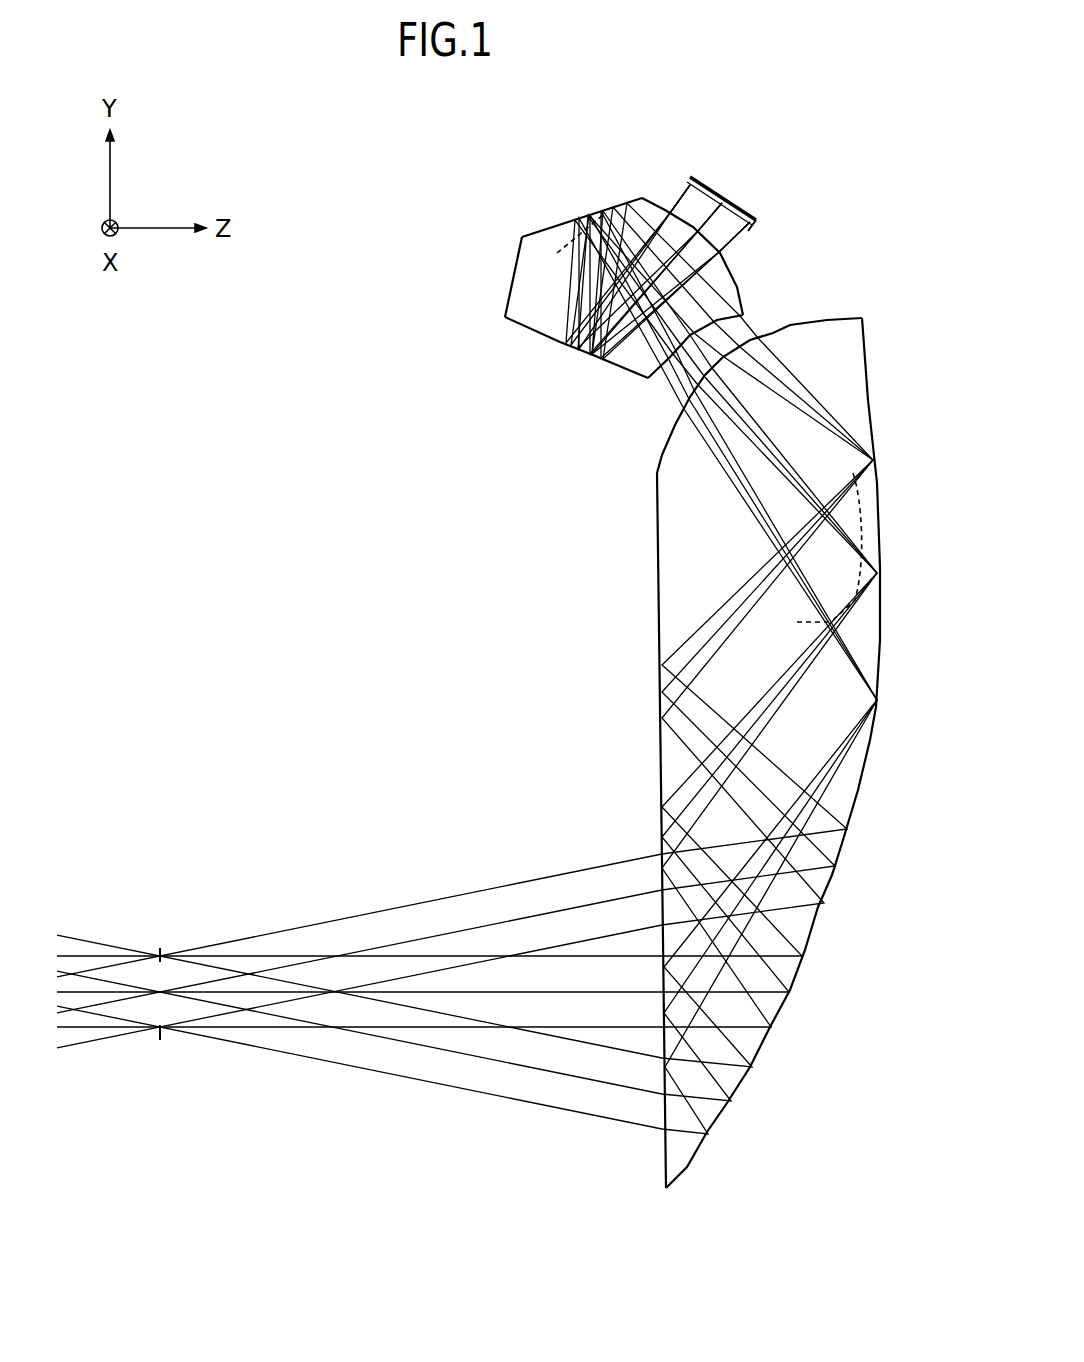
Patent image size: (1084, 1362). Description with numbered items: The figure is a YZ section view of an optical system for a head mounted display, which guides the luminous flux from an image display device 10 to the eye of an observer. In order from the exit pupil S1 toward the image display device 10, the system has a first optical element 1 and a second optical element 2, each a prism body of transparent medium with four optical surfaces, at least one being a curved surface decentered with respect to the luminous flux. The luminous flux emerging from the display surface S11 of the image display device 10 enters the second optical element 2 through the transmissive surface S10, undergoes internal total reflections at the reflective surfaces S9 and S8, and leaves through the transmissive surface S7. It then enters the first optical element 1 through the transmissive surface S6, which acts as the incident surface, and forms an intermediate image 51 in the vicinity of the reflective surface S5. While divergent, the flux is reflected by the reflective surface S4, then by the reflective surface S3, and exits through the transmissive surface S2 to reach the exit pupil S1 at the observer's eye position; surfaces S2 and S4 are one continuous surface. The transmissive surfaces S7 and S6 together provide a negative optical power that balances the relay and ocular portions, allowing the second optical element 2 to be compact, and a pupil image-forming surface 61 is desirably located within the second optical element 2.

The first optical element 1 is at (747, 732).
The second optical element 2 is at (658, 283).
The image display device 10 is at (764, 169).
The intermediate image 51 is at (857, 487).
The pupil image-forming surface 61 is at (570, 237).
The exit pupil S1 is at (160, 950).
The transmissive surface S2 is at (666, 997).
The reflective surface S3 is at (792, 990).
The reflective surface S4 is at (662, 838).
The reflective surface S5 is at (878, 558).
The transmissive surface S6 is at (725, 338).
The transmissive surface S7 is at (668, 368).
The reflective surface S8 is at (617, 207).
The reflective surface S9 is at (593, 363).
The transmissive surface S10 is at (720, 240).
The display surface S11 is at (723, 198).